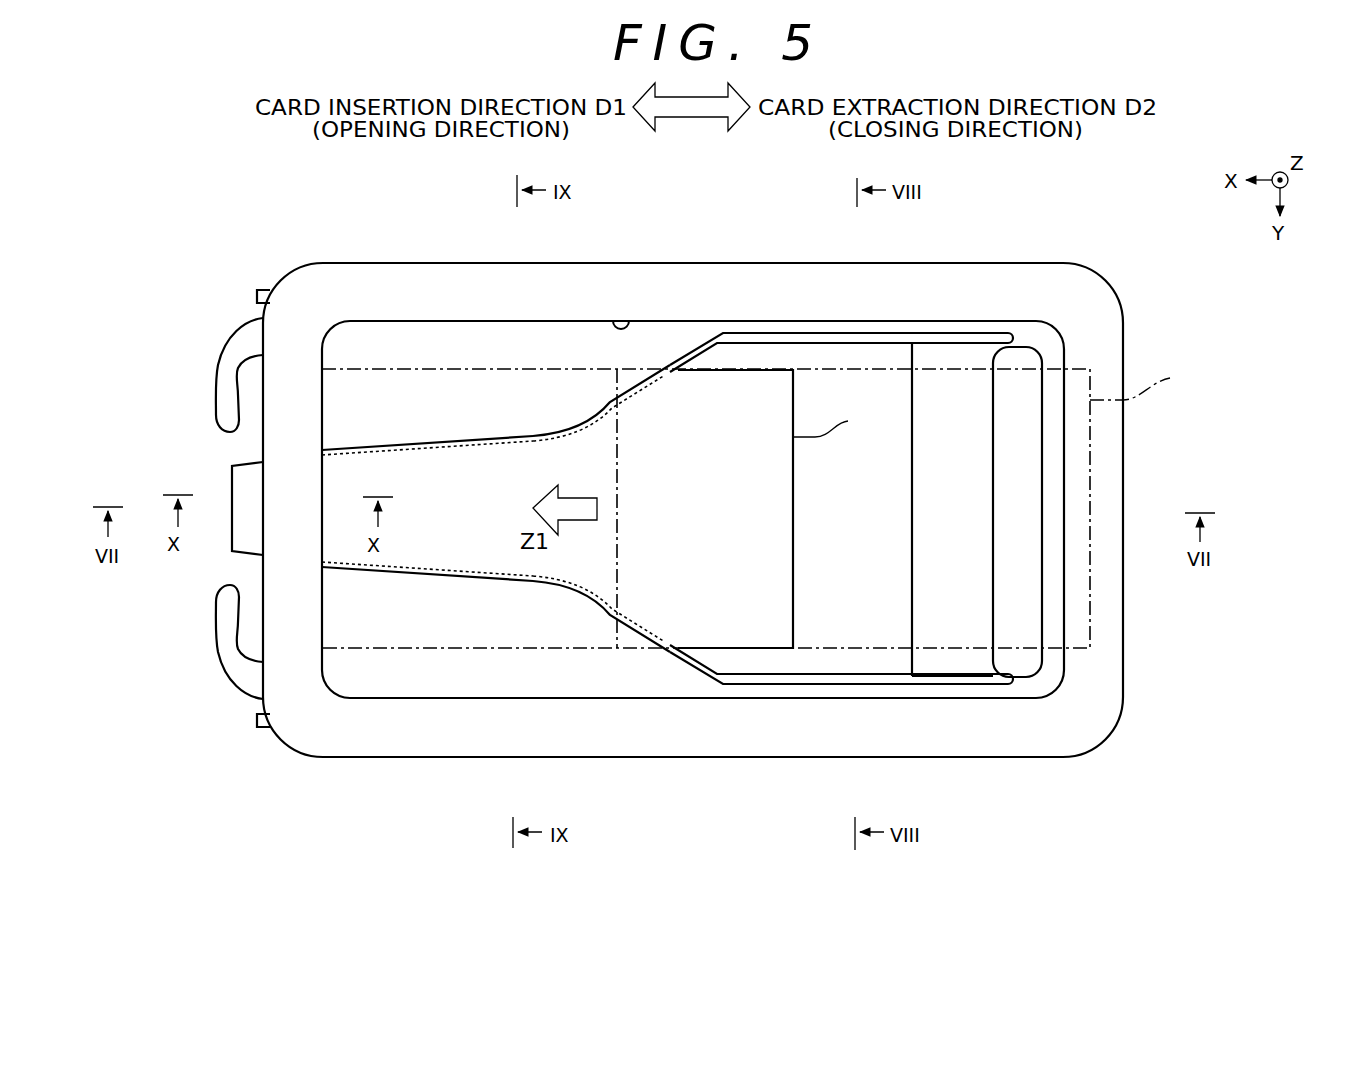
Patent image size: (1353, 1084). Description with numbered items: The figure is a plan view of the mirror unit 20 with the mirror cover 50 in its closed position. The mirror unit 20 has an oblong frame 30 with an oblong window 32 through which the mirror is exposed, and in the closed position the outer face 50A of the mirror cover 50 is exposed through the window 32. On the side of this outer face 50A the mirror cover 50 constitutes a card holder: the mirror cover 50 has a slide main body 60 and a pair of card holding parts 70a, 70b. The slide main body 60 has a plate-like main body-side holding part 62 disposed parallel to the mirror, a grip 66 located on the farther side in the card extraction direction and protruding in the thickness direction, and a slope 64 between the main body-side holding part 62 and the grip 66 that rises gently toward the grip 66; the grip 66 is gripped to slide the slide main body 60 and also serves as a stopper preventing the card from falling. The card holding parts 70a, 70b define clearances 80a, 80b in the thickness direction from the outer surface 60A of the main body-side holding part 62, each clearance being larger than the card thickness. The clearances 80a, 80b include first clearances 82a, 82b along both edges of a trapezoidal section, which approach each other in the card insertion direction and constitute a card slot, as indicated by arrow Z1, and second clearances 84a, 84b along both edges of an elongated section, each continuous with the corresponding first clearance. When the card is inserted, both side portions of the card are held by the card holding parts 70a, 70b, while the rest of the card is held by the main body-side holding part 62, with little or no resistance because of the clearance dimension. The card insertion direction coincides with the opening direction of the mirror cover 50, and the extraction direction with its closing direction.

The mirror unit 20 is at (1115, 257).
The frame 30 is at (971, 260).
The window 32 is at (623, 338).
The mirror cover 50 is at (745, 351).
The outer face 50A is at (765, 351).
The slide main body 60 is at (1204, 405).
The outer surface 60A is at (850, 352).
The main body-side holding part 62 is at (875, 500).
The slope 64 is at (970, 498).
The grip 66 is at (1020, 512).
The card holding part 70a is at (456, 338).
The card holding part 70b is at (455, 677).
The clearance 80a is at (692, 432).
The clearance 80b is at (692, 520).
The first clearance 82a is at (606, 419).
The first clearance 82b is at (606, 602).
The second clearance 84a is at (541, 441).
The second clearance 84b is at (541, 580).